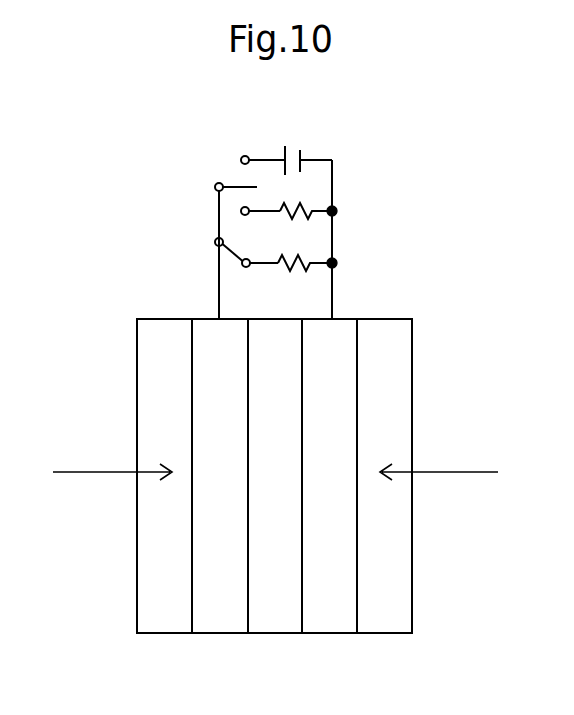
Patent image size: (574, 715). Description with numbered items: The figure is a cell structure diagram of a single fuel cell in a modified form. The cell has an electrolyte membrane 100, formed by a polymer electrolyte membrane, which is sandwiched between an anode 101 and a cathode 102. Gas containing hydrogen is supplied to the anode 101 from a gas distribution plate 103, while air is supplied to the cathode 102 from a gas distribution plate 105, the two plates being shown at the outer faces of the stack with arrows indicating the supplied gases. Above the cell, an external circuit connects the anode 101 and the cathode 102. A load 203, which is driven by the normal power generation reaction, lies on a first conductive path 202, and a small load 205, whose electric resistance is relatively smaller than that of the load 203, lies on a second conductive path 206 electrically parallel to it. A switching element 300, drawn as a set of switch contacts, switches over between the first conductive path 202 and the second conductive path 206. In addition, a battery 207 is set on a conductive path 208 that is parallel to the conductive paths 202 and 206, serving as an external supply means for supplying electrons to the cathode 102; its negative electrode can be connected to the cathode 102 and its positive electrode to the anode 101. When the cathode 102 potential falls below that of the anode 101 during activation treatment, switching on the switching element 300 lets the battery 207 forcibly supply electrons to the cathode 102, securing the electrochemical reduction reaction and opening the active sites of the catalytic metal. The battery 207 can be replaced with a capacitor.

The electrolyte membrane 100 is at (273, 622).
The anode 101 is at (208, 622).
The cathode 102 is at (330, 622).
The gas distribution plate 103 is at (163, 600).
The gas distribution plate 105 is at (385, 595).
The first conductive path 202 is at (318, 251).
The load 203 is at (293, 264).
The small load 205 is at (302, 205).
The second conductive path 206 is at (333, 199).
The battery 207 is at (280, 157).
The conductive path 208 is at (310, 158).
The switching element 300 is at (209, 251).